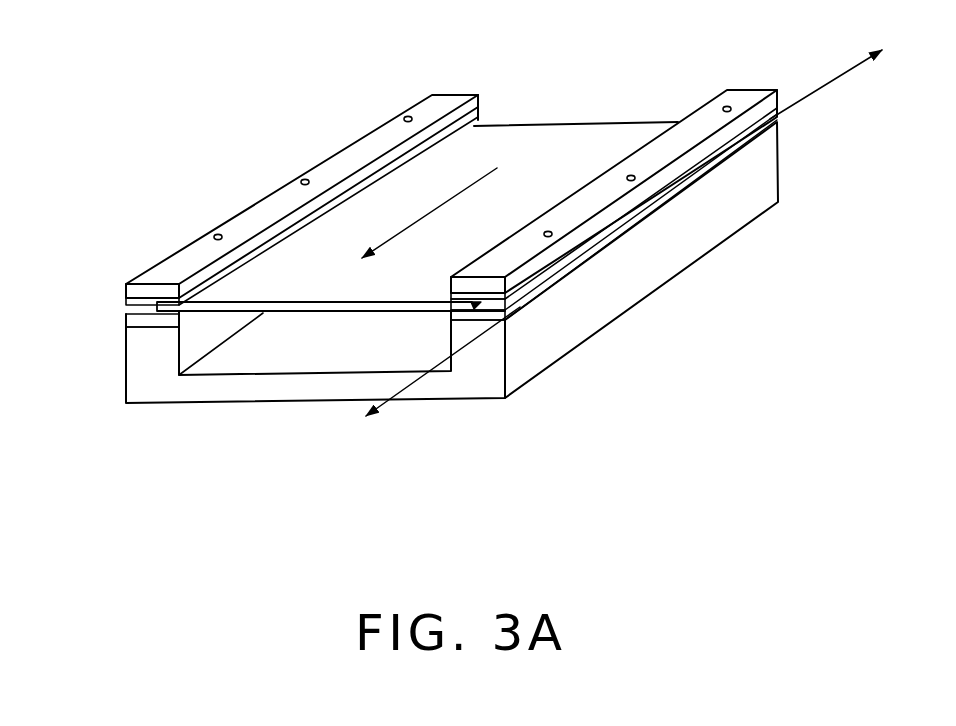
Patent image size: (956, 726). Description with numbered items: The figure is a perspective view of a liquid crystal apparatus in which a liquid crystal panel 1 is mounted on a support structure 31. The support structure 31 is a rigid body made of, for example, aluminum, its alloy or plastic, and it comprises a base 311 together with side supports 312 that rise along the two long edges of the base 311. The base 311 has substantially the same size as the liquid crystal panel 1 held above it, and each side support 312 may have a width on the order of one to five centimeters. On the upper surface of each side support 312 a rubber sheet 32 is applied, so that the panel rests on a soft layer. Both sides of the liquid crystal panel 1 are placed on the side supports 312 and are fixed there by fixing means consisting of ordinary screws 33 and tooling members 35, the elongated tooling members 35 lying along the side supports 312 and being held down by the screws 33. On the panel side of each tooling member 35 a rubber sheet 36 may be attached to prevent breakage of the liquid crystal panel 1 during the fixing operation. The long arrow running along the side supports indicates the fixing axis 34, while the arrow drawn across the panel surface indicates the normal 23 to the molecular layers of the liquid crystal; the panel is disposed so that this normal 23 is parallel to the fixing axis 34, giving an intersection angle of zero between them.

The liquid crystal panel 1 is at (313, 315).
The normal to the molecular layers 23 is at (497, 165).
The support structure 31 is at (458, 405).
The base 311 is at (242, 387).
The side support 312 is at (142, 370).
The rubber sheet 32 is at (126, 317).
The screw 33 is at (406, 116).
The fixing axis 34 is at (852, 70).
The tooling member 35 is at (457, 93).
The rubber sheet 36 is at (480, 115).